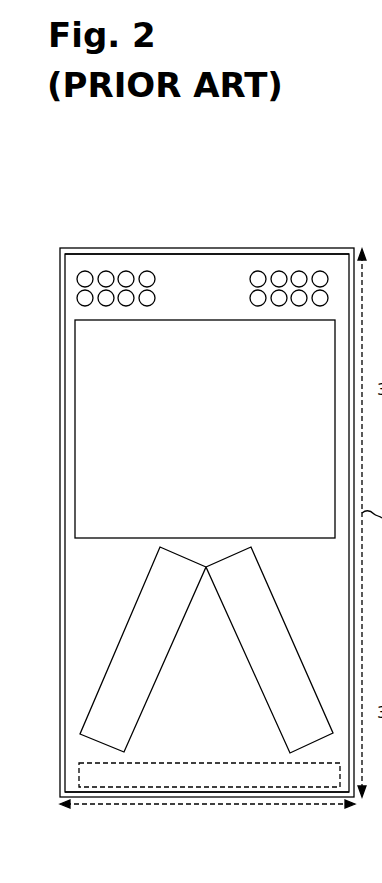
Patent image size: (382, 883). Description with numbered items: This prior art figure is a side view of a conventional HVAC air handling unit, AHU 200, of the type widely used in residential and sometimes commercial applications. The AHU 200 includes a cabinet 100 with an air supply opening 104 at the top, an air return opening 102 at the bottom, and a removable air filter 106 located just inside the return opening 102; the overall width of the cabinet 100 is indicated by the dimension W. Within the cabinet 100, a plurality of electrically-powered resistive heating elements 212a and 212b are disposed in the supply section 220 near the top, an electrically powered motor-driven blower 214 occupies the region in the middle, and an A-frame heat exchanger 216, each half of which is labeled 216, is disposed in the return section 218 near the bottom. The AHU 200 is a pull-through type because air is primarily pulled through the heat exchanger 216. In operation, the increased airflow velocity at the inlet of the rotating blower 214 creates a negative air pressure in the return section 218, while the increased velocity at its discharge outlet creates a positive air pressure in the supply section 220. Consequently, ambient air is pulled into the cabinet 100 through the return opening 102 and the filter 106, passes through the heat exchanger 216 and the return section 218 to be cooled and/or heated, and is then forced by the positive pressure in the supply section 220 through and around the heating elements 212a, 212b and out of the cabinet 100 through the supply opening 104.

The conventional HVAC AHU 200 is at (103, 208).
The cabinet 100 is at (58, 503).
The air supply opening 104 is at (213, 254).
The air return opening 102 is at (263, 793).
The removable air filter 106 is at (214, 776).
The electrically-powered resistive heating element 212a is at (118, 269).
The electrically-powered resistive heating element 212b is at (280, 270).
The supply section 220 is at (225, 293).
The electrically powered motor-driven blower 214 is at (205, 429).
The A-frame heat exchanger 216 is at (206, 650).
The return section 218 is at (230, 693).
The width W is at (300, 807).